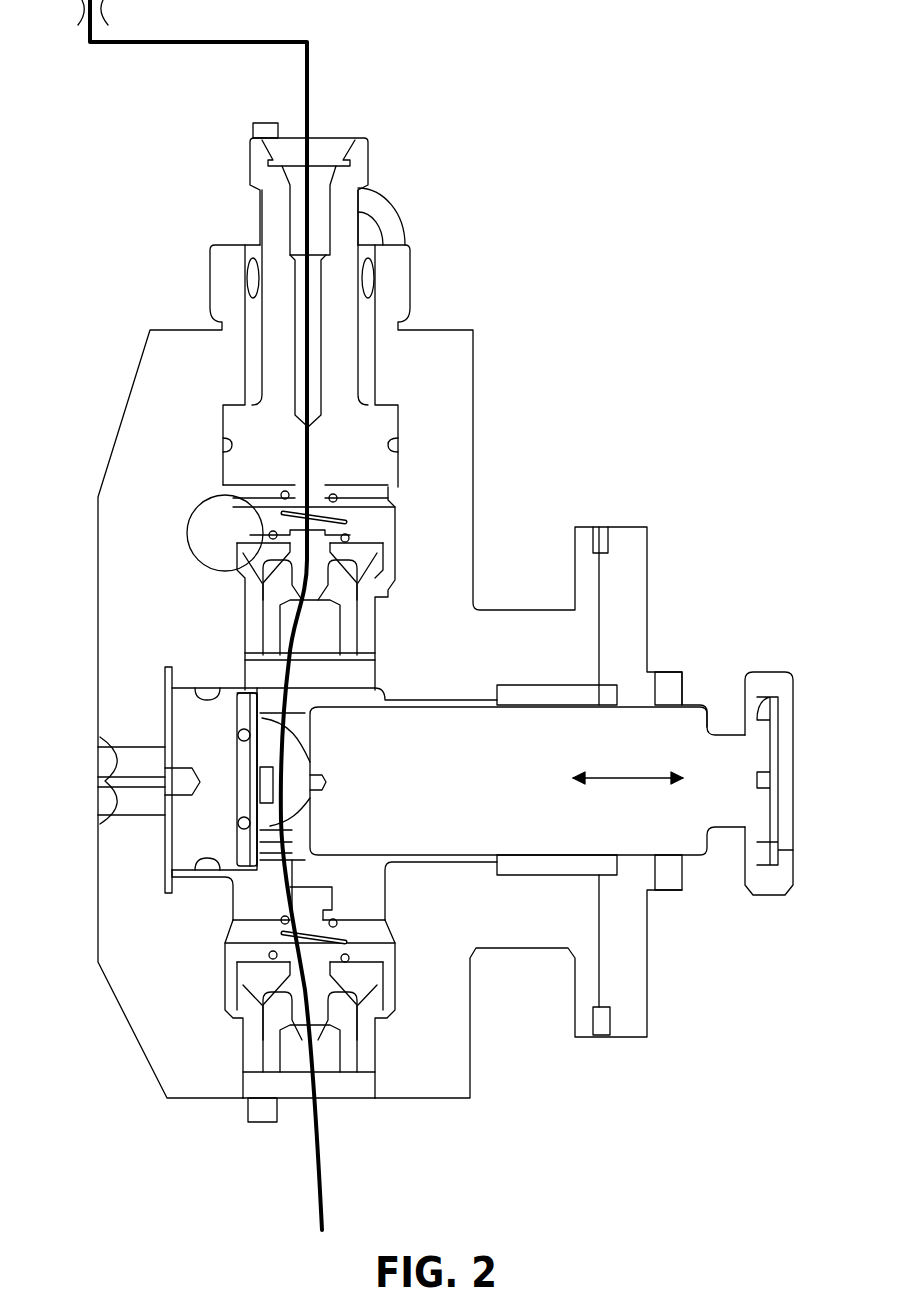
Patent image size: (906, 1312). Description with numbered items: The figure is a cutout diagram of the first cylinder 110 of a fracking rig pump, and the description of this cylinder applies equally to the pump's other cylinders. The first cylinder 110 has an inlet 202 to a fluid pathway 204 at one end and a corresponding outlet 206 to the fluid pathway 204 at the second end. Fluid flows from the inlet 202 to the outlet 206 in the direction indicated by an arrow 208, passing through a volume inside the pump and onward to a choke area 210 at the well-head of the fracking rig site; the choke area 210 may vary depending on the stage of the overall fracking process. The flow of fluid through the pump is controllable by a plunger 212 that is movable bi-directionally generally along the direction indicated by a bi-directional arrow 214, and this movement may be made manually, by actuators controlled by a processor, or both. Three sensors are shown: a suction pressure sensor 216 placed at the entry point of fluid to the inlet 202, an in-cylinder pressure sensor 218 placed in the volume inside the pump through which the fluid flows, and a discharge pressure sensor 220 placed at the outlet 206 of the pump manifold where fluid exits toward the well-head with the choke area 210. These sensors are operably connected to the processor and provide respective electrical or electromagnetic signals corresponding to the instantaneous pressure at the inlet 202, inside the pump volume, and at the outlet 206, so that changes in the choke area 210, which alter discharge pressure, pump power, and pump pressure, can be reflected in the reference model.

The first cylinder 110 is at (586, 130).
The inlet 202 is at (350, 1097).
The fluid pathway 204 is at (273, 702).
The outlet 206 is at (345, 138).
The arrow 208 is at (312, 100).
The choke area 210 is at (75, 8).
The plunger 212 is at (752, 672).
The bi-directional arrow 214 is at (620, 780).
The suction pressure sensor 216 is at (260, 1115).
The in-cylinder pressure sensor 218 is at (265, 785).
The discharge pressure sensor 220 is at (258, 128).